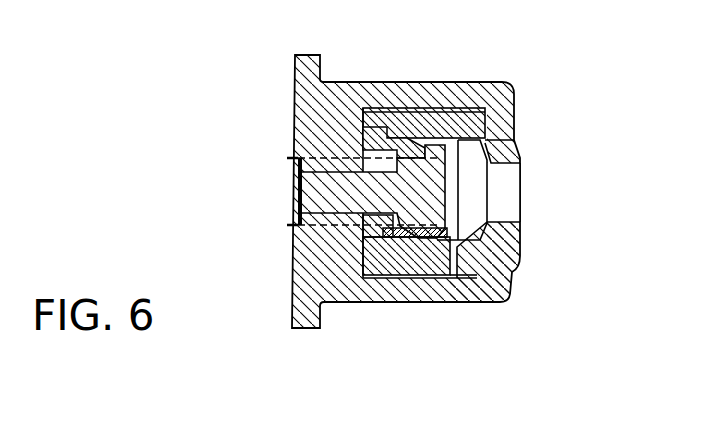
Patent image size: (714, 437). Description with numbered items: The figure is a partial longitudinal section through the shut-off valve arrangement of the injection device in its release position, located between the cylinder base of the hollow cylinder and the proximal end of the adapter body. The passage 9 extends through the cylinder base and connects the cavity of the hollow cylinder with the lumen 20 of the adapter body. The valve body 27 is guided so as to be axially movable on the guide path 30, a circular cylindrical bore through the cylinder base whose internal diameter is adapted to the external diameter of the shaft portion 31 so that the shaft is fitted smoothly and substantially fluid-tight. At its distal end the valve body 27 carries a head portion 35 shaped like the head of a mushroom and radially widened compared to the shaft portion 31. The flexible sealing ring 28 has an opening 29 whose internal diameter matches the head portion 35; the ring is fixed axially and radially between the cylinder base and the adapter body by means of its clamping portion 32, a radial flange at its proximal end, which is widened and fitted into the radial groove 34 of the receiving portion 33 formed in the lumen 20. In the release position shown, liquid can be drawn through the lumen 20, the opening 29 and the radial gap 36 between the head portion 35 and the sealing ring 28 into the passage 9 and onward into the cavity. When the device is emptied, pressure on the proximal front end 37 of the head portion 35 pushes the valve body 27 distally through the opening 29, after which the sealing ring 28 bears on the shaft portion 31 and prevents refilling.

The passage 9 is at (297, 157).
The lumen 20 is at (512, 198).
The valve body 27 is at (325, 230).
The sealing ring 28 is at (417, 108).
The opening 29 is at (480, 192).
The guide path 30 is at (299, 178).
The shaft portion 31 is at (340, 166).
The clamping portion 32 is at (370, 240).
The receiving portion 33 is at (445, 262).
The radial groove 34 is at (386, 238).
The head portion 35 is at (512, 275).
The radial gap 36 is at (516, 138).
The proximal front end 37 is at (299, 193).